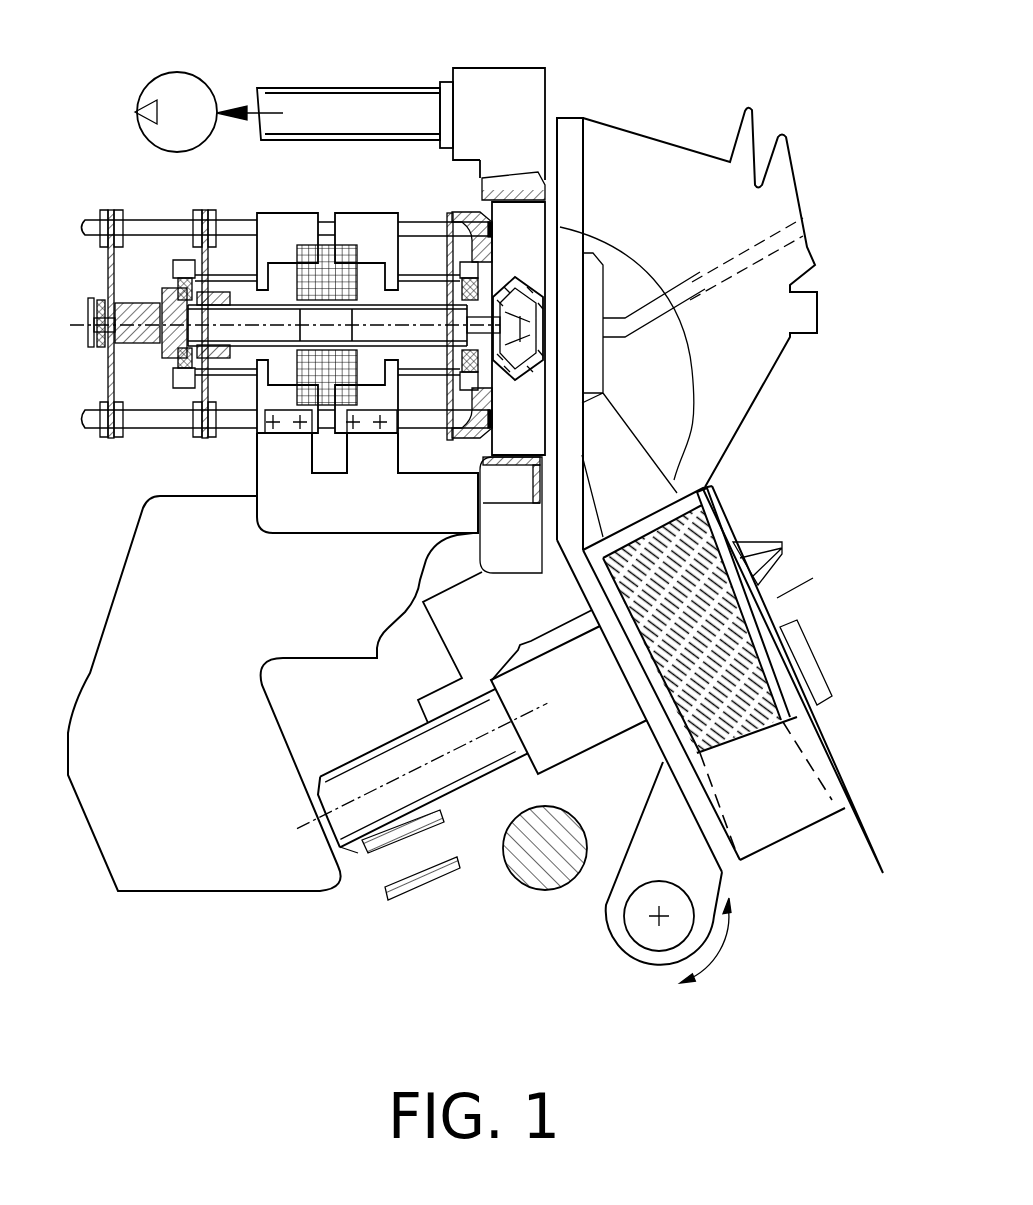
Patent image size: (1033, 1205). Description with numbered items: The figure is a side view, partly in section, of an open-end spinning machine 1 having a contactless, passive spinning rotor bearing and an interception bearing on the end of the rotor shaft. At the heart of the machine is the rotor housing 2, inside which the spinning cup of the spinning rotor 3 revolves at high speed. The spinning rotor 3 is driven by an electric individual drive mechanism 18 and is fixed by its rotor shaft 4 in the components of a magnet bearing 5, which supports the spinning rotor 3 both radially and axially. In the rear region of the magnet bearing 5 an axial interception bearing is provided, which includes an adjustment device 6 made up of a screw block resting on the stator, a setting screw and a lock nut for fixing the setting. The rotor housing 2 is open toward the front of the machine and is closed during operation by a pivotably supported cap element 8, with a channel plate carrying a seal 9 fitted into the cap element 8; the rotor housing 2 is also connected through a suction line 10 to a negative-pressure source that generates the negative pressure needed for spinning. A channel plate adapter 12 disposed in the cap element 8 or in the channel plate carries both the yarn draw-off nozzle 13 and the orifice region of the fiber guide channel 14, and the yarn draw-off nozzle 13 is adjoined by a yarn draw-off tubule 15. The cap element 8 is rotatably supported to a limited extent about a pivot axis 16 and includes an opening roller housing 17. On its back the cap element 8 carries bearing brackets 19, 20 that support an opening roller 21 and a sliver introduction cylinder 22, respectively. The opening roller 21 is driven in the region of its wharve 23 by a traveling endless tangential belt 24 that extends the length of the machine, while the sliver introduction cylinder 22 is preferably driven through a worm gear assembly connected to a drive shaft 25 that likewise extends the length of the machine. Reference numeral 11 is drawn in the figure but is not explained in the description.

The open-end spinning machine 1 is at (660, 92).
The rotor housing 2 is at (527, 242).
The spinning rotor 3 is at (566, 315).
The rotor shaft 4 is at (247, 343).
The magnet bearing 5 is at (143, 462).
The adjustment device 6 is at (89, 364).
The cap element 8 is at (568, 143).
The seal 9 is at (555, 411).
The suction line 10 is at (362, 103).
The pump 11 is at (177, 100).
The channel plate adapter 12 is at (553, 306).
The yarn draw-off nozzle 13 is at (548, 340).
The fiber guide channel 14 is at (630, 440).
The yarn draw-off tubule 15 is at (672, 300).
The pivot axis 16 is at (659, 916).
The opening roller housing 17 is at (813, 747).
The electric individual drive mechanism 18 is at (320, 488).
The bearing bracket 19 is at (558, 688).
The bearing bracket 20 is at (530, 643).
The opening roller 21 is at (683, 563).
The sliver introduction cylinder 22 is at (748, 547).
The wharve 23 is at (373, 770).
The tangential belt 24 is at (368, 863).
The drive shaft 25 is at (525, 858).